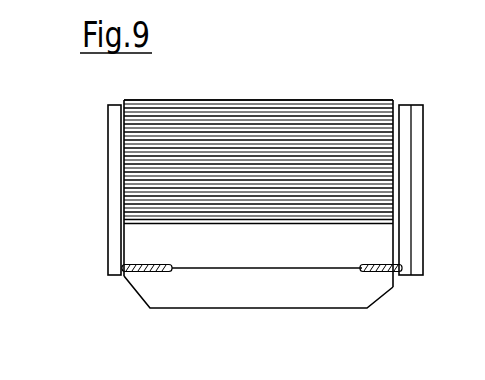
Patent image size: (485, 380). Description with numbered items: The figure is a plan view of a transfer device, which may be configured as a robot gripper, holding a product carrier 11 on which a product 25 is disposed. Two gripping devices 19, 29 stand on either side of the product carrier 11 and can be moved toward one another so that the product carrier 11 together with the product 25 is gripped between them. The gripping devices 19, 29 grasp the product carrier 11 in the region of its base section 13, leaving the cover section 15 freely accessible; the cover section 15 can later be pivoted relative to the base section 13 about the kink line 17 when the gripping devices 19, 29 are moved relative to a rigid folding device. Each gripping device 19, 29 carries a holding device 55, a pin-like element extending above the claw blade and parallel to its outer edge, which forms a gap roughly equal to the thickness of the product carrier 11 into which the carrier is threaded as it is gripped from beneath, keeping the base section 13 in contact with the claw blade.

The product carrier 11 is at (118, 305).
The base section 13 is at (169, 253).
The cover section 15 is at (199, 301).
The kink line 17 is at (342, 269).
The gripping device 19 is at (423, 172).
The product 25 is at (347, 128).
The gripping device 29 is at (113, 188).
The holding device 55 is at (122, 264).